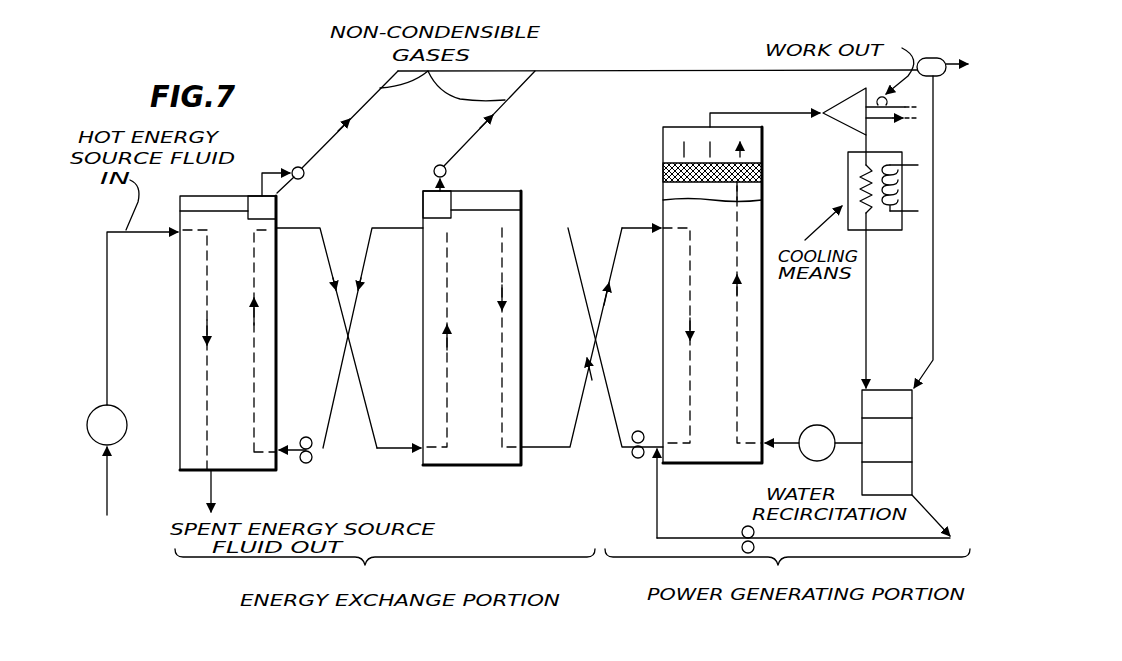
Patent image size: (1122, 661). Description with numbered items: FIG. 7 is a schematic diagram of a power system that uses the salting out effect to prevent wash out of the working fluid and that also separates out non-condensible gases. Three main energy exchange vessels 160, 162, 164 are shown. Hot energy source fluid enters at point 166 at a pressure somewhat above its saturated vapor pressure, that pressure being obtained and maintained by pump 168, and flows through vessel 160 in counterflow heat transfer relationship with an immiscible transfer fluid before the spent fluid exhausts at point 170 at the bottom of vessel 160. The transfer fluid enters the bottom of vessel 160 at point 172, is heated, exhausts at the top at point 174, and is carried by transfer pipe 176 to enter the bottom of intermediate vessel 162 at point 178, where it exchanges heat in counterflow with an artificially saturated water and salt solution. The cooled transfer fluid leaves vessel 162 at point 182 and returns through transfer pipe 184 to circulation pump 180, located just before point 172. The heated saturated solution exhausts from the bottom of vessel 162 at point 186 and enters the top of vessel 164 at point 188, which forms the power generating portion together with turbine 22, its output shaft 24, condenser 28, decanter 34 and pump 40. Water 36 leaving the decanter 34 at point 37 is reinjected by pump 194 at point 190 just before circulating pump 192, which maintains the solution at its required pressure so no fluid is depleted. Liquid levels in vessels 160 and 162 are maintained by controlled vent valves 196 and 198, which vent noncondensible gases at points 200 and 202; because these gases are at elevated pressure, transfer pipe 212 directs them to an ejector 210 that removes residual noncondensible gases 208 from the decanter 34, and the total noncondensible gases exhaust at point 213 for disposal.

The first energy exchange vessel 160 is at (181, 330).
The intermediate vessel 162 is at (420, 337).
The third vessel 164 is at (662, 358).
The hot energy source fluid inlet point 166 is at (142, 240).
The pump 168 is at (118, 406).
The spent energy source fluid exhaust point 170 is at (205, 495).
The transfer fluid entrance point 172 is at (295, 460).
The transfer fluid exhaust point 174 is at (288, 231).
The transfer pipe 176 is at (354, 368).
The transfer fluid entry point 178 is at (387, 455).
The circulation pump 180 is at (314, 460).
The transfer fluid exhaust point 182 is at (396, 220).
The transfer pipe 184 is at (338, 391).
The saturated solution exhaust point 186 is at (539, 458).
The saturated solution entry point 188 is at (625, 228).
The water reinjection point 190 is at (647, 430).
The circulating pump 192 is at (636, 464).
The pump 194 is at (742, 531).
The controlled vent valve 196 is at (278, 205).
The controlled vent valve 198 is at (452, 206).
The noncondensible gas vent point 200 is at (288, 166).
The noncondensible gas vent point 202 is at (434, 174).
The residual noncondensible gases 208 is at (930, 362).
The ejector 210 is at (937, 83).
The transfer pipe 212 is at (640, 70).
The total noncondensible gas exhaust point 213 is at (942, 58).
The turbine 22 is at (834, 124).
The shaft 24 is at (890, 122).
The condenser 28 is at (890, 234).
The decanter 34 is at (914, 395).
The water 36 is at (905, 482).
The decanter water outlet point 37 is at (888, 524).
The pump 40 is at (817, 424).